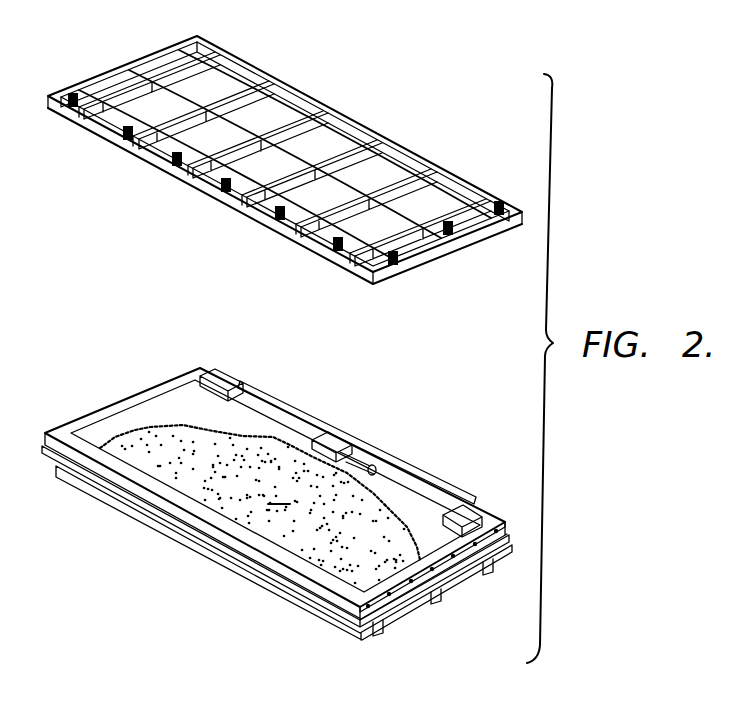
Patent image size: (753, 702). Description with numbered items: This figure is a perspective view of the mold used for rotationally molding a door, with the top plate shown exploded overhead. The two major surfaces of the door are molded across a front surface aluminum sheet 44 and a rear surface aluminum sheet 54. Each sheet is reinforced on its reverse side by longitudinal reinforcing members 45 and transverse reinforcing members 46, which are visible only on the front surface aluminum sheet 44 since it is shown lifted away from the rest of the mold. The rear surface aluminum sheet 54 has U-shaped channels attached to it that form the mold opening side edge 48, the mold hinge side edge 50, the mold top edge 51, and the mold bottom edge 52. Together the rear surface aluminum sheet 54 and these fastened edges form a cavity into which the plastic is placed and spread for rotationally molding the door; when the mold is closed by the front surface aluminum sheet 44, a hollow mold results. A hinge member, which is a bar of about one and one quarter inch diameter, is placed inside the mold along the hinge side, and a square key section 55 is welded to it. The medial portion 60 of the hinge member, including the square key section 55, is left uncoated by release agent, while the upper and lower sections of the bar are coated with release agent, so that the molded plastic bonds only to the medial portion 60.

The front surface aluminum sheet 44 is at (97, 131).
The longitudinal reinforcing members 45 is at (227, 78).
The transverse reinforcing members 46 is at (275, 84).
The mold opening side edge 48 is at (277, 503).
The mold hinge side edge 50 is at (298, 404).
The mold top edge 51 is at (137, 397).
The mold bottom edge 52 is at (447, 578).
The rear surface aluminum sheet 54 is at (162, 533).
The square key section 55 is at (351, 454).
The medial portion 60 is at (343, 423).